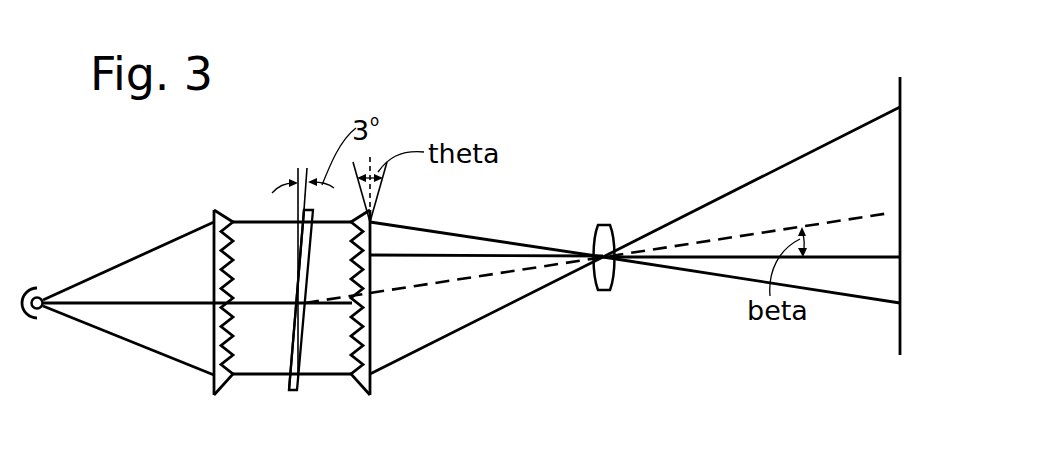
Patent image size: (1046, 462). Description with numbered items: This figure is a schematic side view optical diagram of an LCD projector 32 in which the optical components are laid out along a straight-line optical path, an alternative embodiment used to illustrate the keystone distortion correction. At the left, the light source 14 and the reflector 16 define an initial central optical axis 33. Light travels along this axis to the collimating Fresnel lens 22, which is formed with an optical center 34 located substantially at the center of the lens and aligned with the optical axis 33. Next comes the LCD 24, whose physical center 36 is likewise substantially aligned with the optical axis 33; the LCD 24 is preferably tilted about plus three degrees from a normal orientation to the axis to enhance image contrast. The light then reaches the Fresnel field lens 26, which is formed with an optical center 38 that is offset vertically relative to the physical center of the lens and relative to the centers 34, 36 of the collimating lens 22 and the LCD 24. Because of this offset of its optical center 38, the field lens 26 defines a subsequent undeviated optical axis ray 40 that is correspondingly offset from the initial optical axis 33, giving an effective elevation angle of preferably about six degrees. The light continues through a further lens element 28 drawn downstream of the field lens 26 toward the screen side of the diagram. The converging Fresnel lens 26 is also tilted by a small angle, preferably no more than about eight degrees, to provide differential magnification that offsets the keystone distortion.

The light source 14 is at (37, 287).
The reflector 16 is at (40, 311).
The collimating Fresnel lens 22 is at (212, 391).
The LCD 24 is at (293, 394).
The Fresnel field lens 26 is at (373, 384).
The projection lens 28 is at (592, 228).
The LCD projector 32 is at (155, 196).
The initial central optical axis 33 is at (187, 300).
The optical center 34 is at (219, 306).
The physical center 36 is at (298, 320).
The optical center 38 is at (374, 254).
The undeviated optical axis ray 40 is at (886, 256).